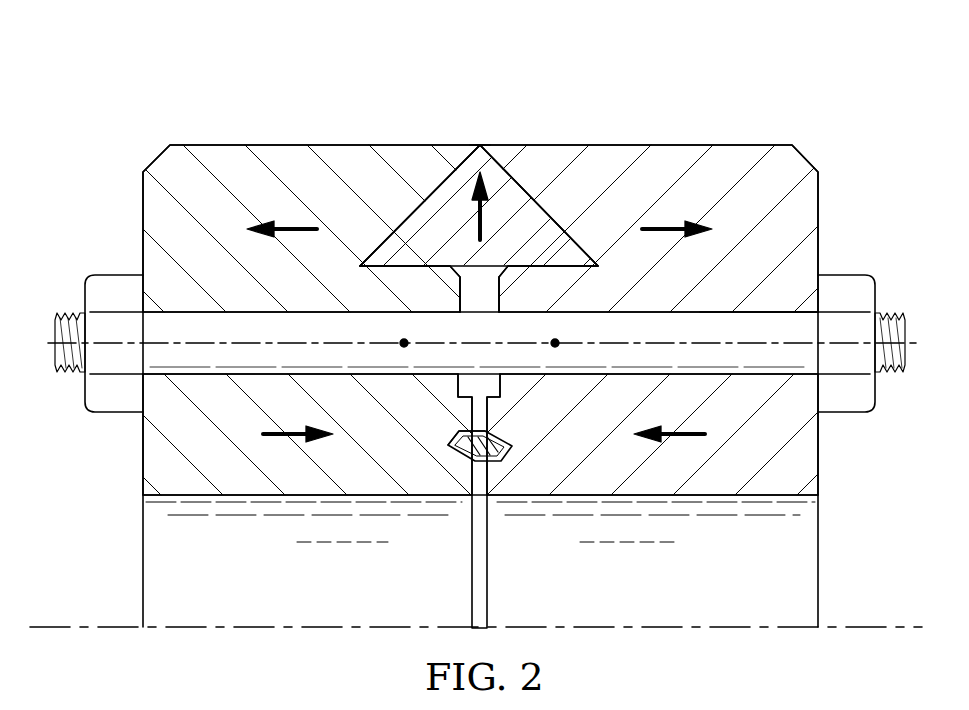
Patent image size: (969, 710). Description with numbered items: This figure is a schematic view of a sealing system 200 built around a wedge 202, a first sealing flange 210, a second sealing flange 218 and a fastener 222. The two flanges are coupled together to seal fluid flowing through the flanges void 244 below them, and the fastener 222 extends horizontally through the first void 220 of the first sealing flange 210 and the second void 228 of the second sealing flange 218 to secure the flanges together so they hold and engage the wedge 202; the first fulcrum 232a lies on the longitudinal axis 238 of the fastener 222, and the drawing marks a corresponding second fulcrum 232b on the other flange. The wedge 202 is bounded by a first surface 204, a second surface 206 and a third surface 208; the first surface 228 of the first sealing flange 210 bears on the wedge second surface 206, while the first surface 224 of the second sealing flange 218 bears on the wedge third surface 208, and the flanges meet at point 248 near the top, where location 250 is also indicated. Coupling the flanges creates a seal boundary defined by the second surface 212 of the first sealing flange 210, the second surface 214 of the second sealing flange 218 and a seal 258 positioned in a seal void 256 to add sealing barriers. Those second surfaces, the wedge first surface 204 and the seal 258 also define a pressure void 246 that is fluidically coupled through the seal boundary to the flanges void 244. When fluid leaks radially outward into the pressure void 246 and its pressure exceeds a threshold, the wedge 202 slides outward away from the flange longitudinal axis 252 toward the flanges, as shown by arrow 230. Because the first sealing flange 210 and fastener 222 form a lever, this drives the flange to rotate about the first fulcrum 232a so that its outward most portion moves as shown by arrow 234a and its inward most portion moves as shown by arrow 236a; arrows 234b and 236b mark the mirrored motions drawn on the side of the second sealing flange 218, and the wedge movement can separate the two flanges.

The sealing system 200 is at (645, 87).
The wedge 202 is at (565, 270).
The first surface 204 is at (403, 268).
The second surface 206 is at (406, 155).
The third surface 208 is at (548, 147).
The first sealing flange 210 is at (221, 152).
The second surface 212 is at (450, 500).
The second surface 214 is at (510, 500).
The second sealing flange 218 is at (732, 153).
The first void 220 is at (163, 357).
The fastener 222 is at (180, 323).
The first surface 224 is at (552, 228).
The first surface 228 is at (421, 205).
The arrow 230 is at (476, 228).
The first fulcrum 232a is at (404, 348).
The second pivot point 232b is at (555, 348).
The arrow 234a is at (297, 226).
The second upper displacement direction 234b is at (662, 225).
The arrow 236a is at (282, 440).
The second lower displacement direction 236b is at (700, 440).
The longitudinal axis 238 is at (46, 342).
The flanges void 244 is at (330, 601).
The pressure void 246 is at (490, 488).
The point 248 is at (482, 140).
The gap 250 is at (462, 146).
The flange longitudinal axis 252 is at (892, 631).
The seal void 256 is at (506, 462).
The seal 258 is at (450, 448).